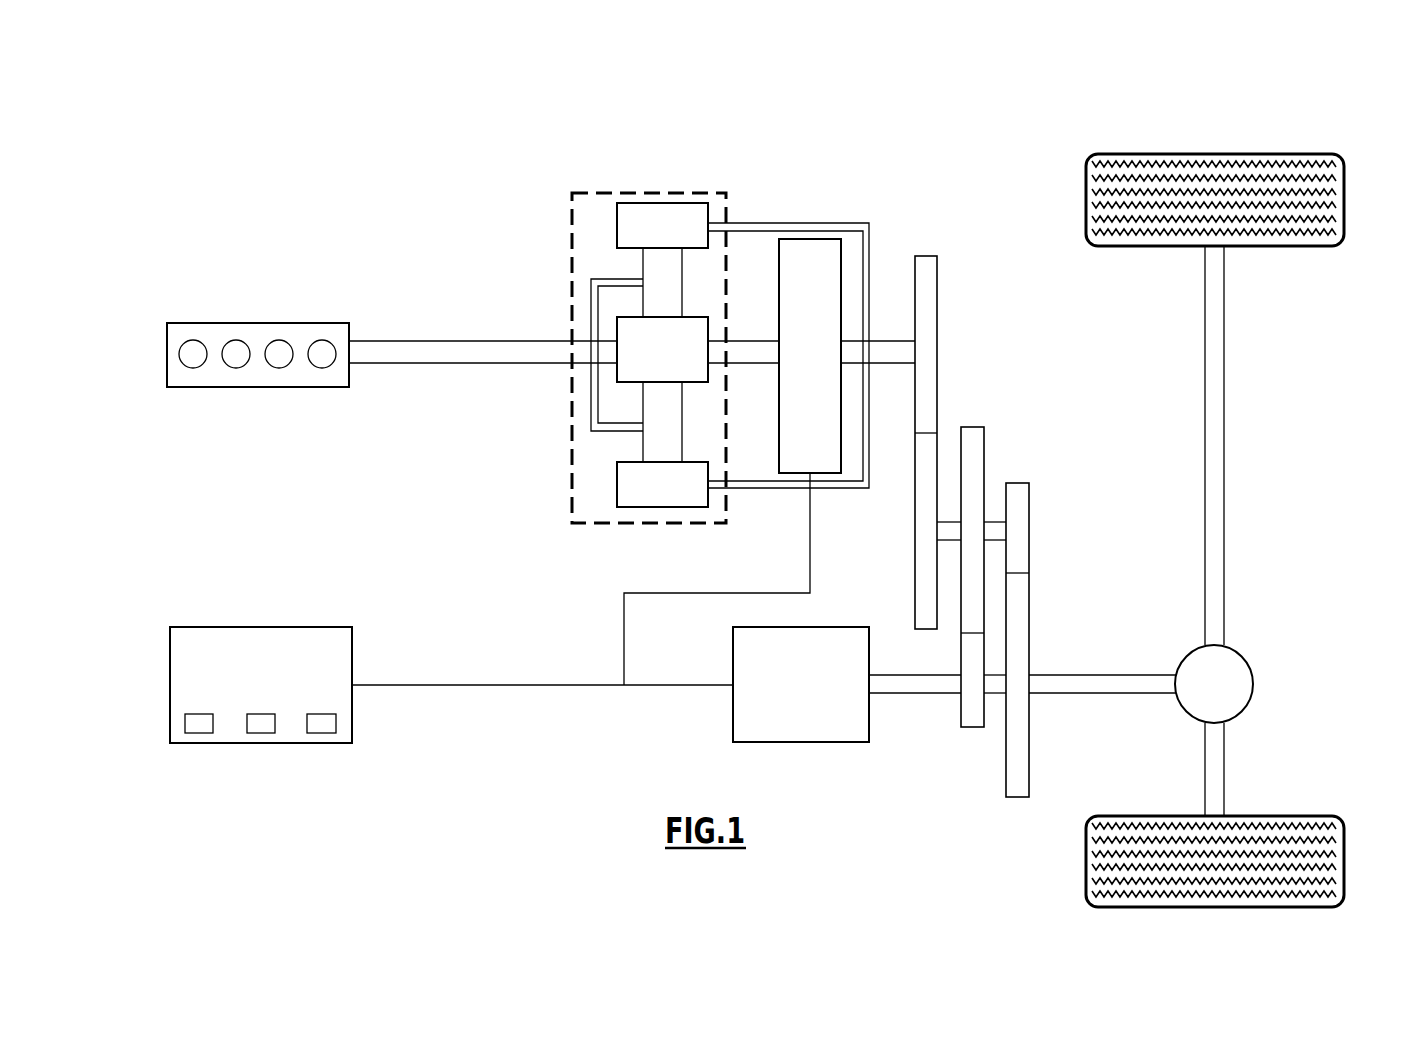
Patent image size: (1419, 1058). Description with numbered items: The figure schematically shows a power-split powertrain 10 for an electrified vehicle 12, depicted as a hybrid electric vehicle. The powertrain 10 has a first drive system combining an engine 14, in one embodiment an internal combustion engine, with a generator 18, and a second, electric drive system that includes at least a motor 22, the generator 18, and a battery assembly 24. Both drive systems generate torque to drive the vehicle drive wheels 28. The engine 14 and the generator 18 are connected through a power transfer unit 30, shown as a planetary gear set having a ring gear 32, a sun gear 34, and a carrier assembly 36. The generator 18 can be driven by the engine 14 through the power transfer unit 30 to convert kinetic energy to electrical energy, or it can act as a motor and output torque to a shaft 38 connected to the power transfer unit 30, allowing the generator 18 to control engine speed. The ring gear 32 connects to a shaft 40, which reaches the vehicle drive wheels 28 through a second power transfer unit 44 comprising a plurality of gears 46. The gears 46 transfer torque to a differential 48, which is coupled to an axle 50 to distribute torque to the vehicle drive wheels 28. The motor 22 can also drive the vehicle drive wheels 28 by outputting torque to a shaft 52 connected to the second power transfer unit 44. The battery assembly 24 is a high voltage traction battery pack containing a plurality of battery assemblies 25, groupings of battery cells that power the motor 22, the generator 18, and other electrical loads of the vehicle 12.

The powertrain 10 is at (405, 216).
The electrified vehicle 12 is at (828, 152).
The engine 14 is at (182, 323).
The generator 18 is at (787, 239).
The motor 22 is at (870, 727).
The battery assembly 24 is at (190, 627).
The battery assemblies 25 is at (213, 723).
The vehicle drive wheels 28 is at (1344, 860).
The power transfer unit 30 is at (572, 490).
The ring gear 32 is at (617, 224).
The sun gear 34 is at (617, 326).
The carrier assembly 36 is at (591, 414).
The shaft 38 is at (742, 341).
The shaft 40 is at (890, 340).
The second power transfer unit 44 is at (1015, 386).
The gears 46 is at (937, 394).
The differential 48 is at (1248, 706).
The axle 50 is at (1224, 432).
The shaft 52 is at (925, 695).